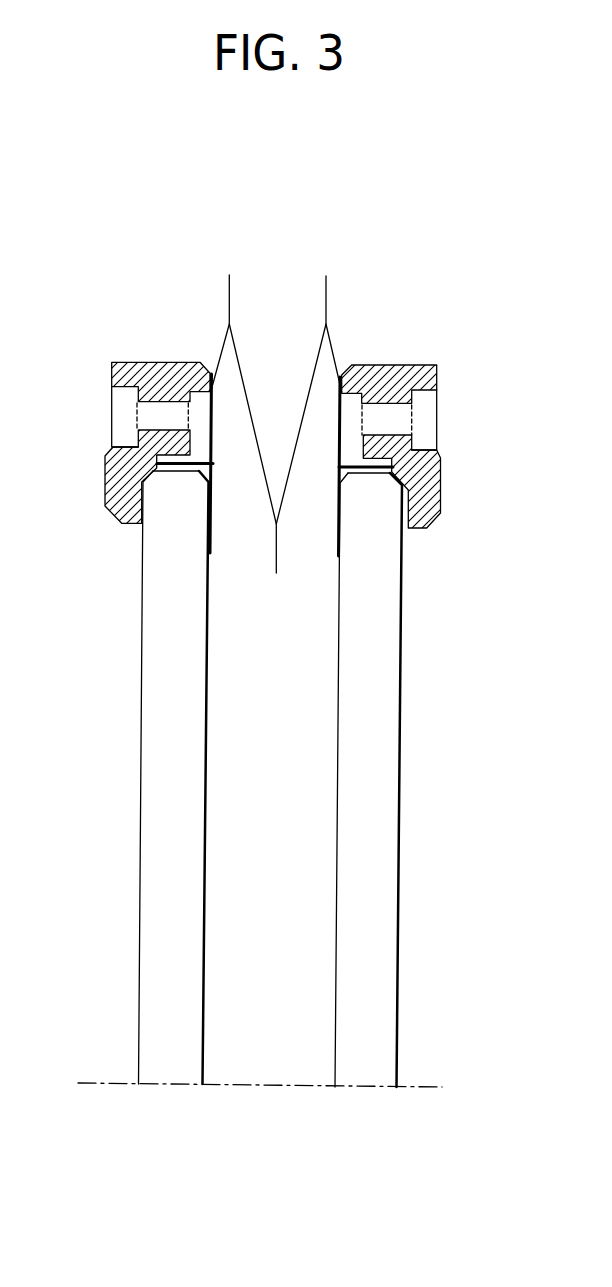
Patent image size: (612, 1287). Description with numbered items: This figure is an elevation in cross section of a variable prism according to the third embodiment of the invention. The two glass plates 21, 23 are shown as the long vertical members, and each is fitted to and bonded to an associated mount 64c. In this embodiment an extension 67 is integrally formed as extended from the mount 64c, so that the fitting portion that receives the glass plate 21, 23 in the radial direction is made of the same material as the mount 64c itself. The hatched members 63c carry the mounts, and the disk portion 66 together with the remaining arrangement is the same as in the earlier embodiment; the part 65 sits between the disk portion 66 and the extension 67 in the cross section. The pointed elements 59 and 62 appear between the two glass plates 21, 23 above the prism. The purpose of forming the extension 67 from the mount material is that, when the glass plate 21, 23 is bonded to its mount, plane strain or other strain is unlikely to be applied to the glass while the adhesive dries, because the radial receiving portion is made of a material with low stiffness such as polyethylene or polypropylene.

The glass plate 21 is at (158, 710).
The glass plate 23 is at (385, 707).
The first tapered electrode tip 59 is at (229, 284).
The second tapered electrode tip 62 is at (326, 281).
The holder block 63c is at (146, 362).
The mount 64c is at (210, 378).
The spacer member 65 is at (155, 416).
The disk portion 66 is at (120, 418).
The extension 67 is at (160, 450).